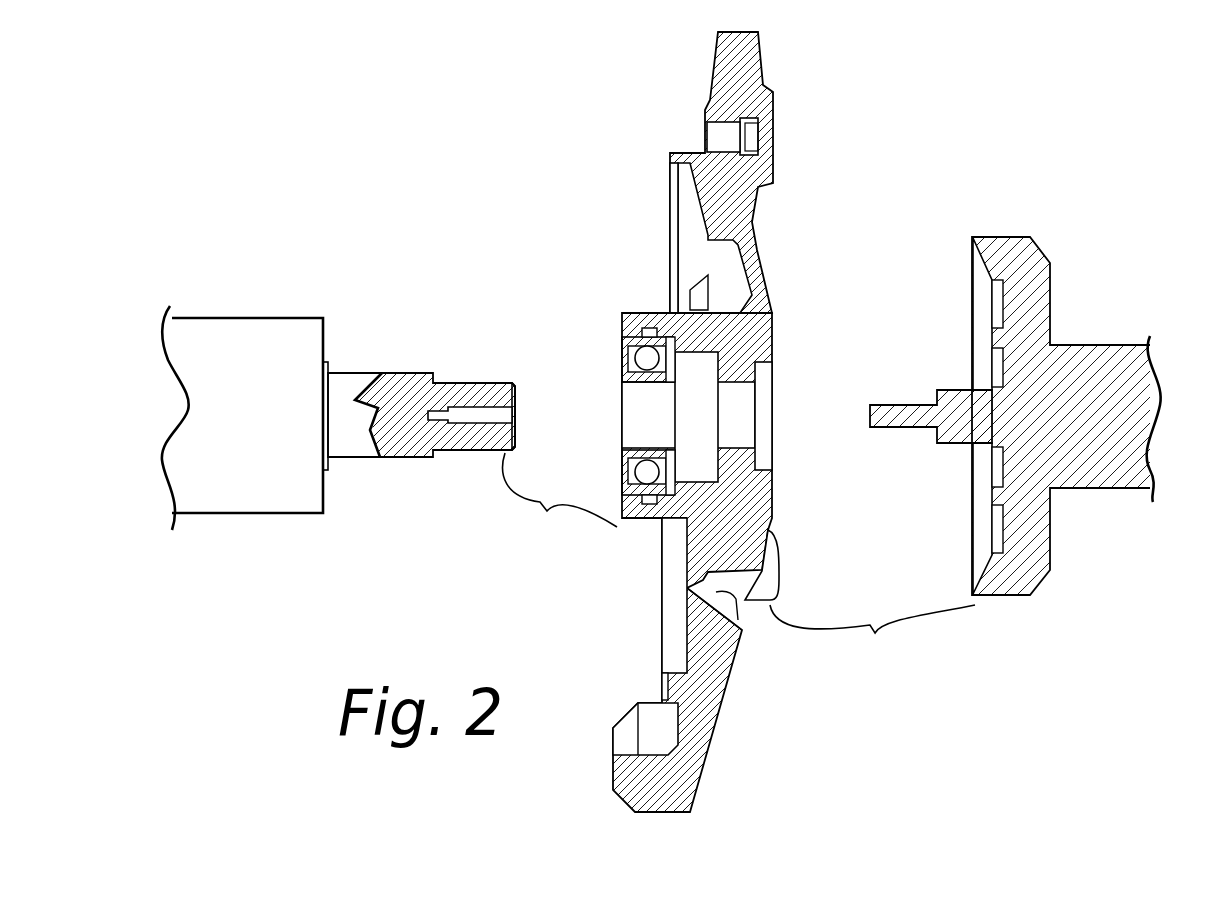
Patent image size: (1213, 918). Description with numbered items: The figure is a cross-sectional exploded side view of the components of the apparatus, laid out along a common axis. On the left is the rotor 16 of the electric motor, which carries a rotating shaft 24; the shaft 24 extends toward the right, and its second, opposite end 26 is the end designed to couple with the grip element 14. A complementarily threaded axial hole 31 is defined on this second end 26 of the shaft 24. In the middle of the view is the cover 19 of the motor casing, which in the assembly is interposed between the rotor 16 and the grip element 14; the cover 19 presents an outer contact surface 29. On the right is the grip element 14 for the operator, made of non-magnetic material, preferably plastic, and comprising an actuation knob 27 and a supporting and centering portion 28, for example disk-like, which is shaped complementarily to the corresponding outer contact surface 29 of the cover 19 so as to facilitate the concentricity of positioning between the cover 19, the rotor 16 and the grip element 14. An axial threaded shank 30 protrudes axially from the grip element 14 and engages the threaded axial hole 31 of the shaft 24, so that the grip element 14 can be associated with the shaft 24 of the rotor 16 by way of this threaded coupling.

The grip element 14 is at (1020, 373).
The rotor 16 is at (245, 312).
The cover 19 is at (780, 253).
The rotating shaft 24 is at (422, 404).
The second end 26 is at (478, 440).
The actuation knob 27 is at (1112, 345).
The supporting and centering portion 28 is at (1005, 237).
The outer contact surface 29 is at (773, 506).
The axial threaded shank 30 is at (905, 405).
The threaded axial hole 31 is at (482, 413).